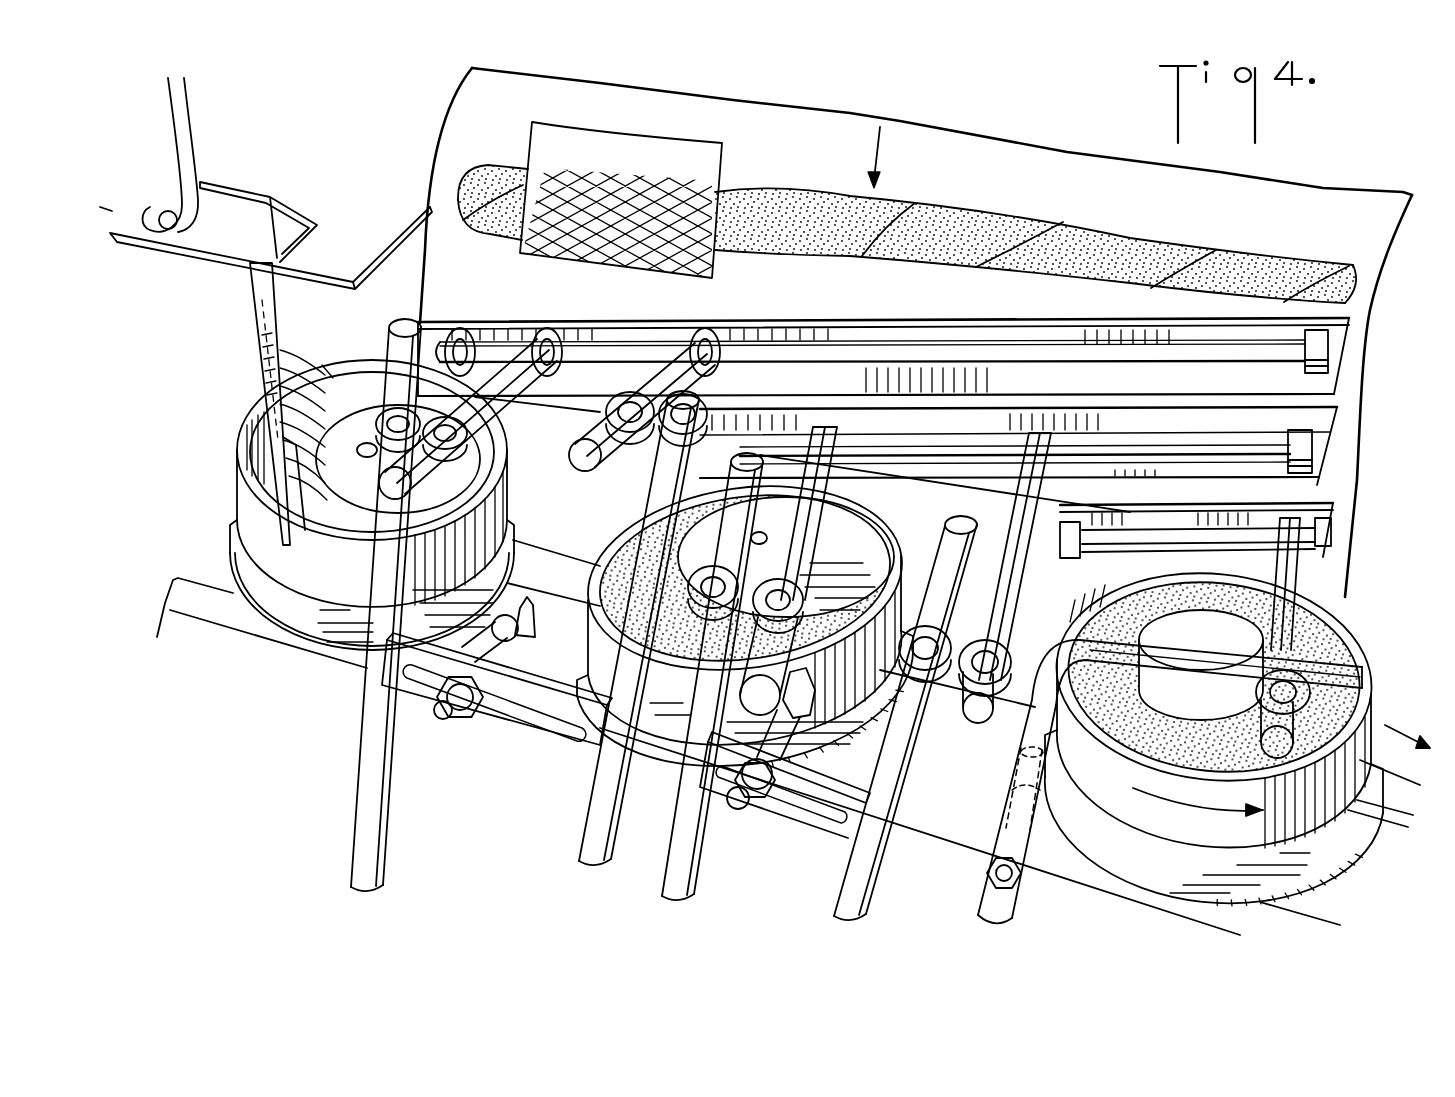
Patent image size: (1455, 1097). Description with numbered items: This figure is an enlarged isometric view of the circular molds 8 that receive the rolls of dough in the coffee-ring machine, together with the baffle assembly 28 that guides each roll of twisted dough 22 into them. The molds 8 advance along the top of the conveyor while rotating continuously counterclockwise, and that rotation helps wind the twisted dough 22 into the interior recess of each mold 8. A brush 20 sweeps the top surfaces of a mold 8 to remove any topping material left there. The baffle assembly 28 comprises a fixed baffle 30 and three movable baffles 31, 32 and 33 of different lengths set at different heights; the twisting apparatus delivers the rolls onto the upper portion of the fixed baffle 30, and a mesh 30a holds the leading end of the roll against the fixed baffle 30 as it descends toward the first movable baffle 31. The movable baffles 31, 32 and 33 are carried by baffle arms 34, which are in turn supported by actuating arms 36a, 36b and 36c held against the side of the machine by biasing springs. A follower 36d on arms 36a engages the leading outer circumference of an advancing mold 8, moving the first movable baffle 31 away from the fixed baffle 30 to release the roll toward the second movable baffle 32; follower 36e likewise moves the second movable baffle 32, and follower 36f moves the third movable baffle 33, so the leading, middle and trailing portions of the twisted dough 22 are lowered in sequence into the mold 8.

The circular mold 8 is at (495, 497).
The brush 20 is at (270, 315).
The roll of twisted dough 22 is at (1018, 230).
The baffle assembly 28 is at (1378, 465).
The fixed baffle 30 is at (962, 146).
The mesh 30a is at (657, 150).
The first movable baffle 31 is at (612, 372).
The second movable baffle 32 is at (1334, 423).
The third movable baffle 33 is at (1325, 532).
The baffle arm 34 is at (587, 434).
The actuating arm 36a is at (597, 802).
The actuating arm 36b is at (843, 880).
The actuating arm 36c is at (990, 898).
The follower 36d is at (527, 627).
The follower 36e is at (824, 723).
The follower 36f is at (1025, 763).